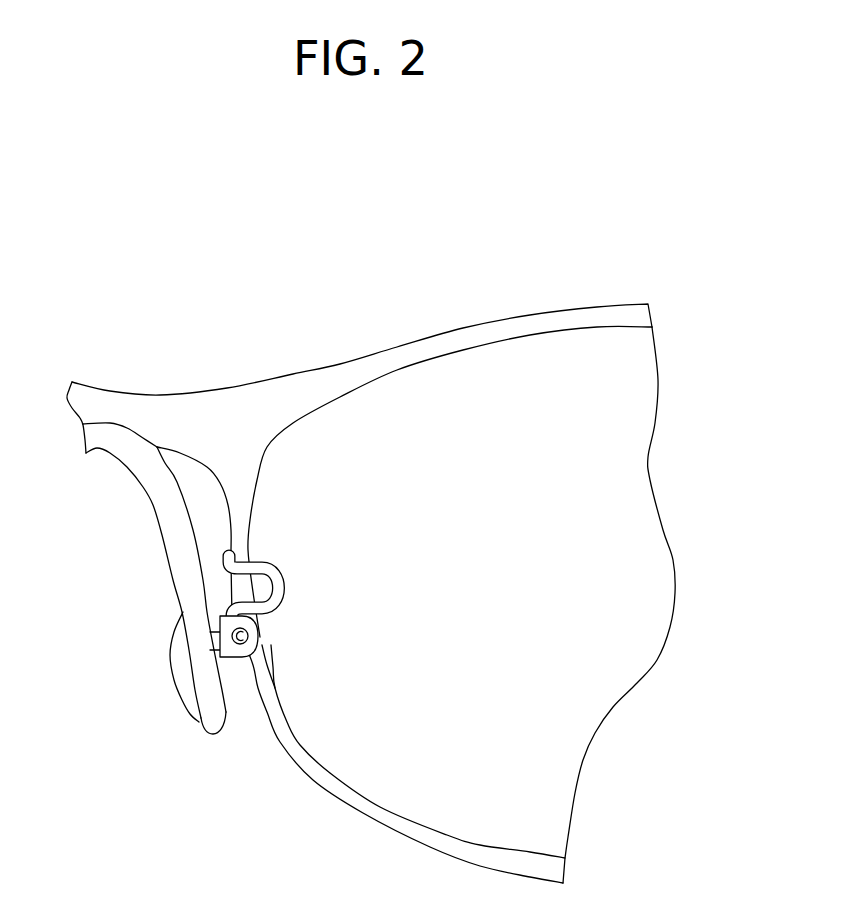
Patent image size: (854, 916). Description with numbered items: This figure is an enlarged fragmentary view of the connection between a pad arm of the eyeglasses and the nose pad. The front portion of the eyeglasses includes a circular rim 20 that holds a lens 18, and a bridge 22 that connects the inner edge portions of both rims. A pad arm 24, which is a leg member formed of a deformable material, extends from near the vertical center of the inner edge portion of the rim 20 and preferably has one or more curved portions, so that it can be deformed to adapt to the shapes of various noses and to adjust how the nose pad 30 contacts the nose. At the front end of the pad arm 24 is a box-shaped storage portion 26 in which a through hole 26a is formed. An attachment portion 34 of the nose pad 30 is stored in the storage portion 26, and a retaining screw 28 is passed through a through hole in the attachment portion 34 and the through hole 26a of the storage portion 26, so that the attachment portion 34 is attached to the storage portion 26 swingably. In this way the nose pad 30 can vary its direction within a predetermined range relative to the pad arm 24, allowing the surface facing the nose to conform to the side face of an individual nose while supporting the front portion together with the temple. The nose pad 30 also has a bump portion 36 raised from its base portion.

The lens 18 is at (527, 380).
The rim 20 is at (400, 352).
The bridge 22 is at (110, 400).
The pad arm 24 is at (279, 563).
The storage portion 26 is at (250, 636).
The through hole 26a is at (248, 631).
The retaining screw 28 is at (275, 688).
The nose pad 30 is at (209, 734).
The attachment portion 34 is at (224, 658).
The bump portion 36 is at (178, 668).